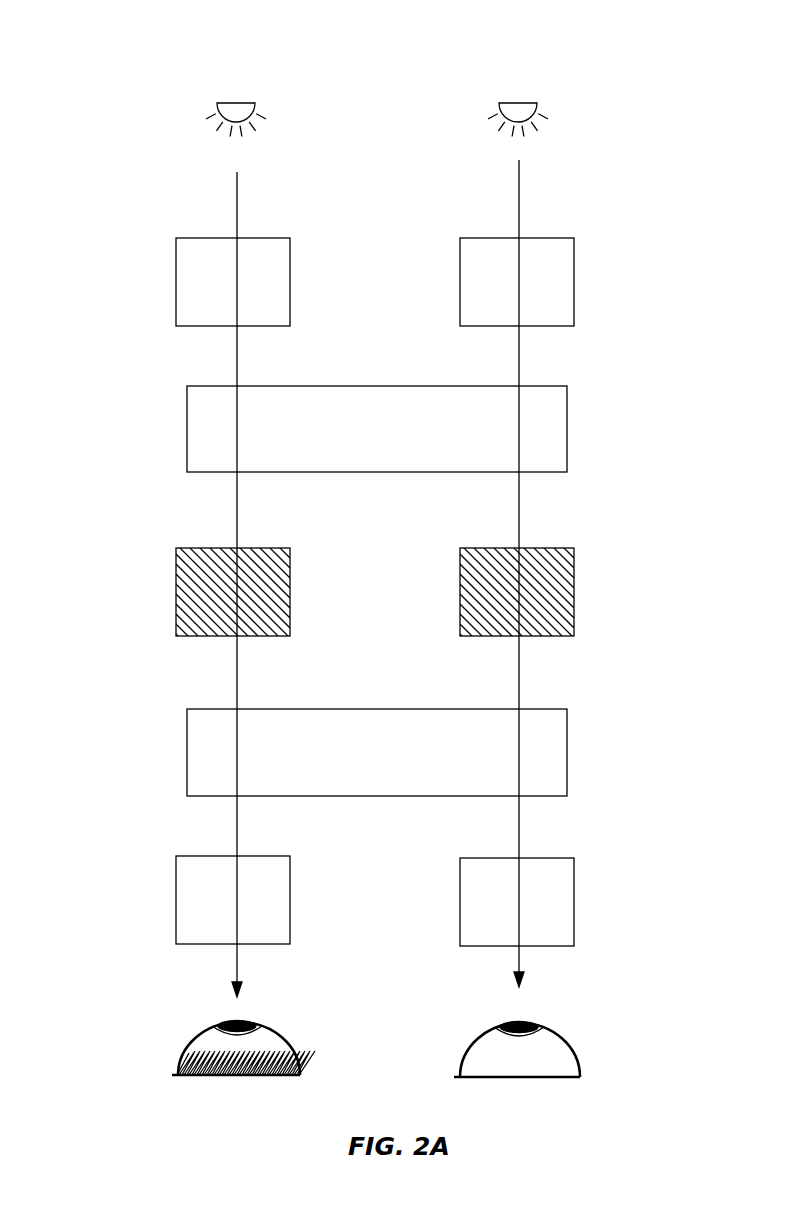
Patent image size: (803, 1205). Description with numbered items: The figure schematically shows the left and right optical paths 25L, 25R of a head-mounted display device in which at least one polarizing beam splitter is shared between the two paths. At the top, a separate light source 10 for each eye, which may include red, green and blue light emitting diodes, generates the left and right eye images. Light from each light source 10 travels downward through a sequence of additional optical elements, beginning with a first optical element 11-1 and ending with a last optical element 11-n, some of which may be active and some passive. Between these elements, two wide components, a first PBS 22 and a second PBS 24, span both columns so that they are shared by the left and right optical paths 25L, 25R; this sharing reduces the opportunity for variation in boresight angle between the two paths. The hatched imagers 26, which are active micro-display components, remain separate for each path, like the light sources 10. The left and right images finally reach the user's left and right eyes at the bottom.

The light source 10 is at (214, 110).
The optical element 11-1 is at (176, 277).
The optical element 11-n is at (176, 905).
The PBS 22 is at (567, 425).
The PBS 24 is at (567, 749).
The imager 26 is at (176, 592).
The left optical path 25L is at (168, 58).
The right optical path 25R is at (458, 56).